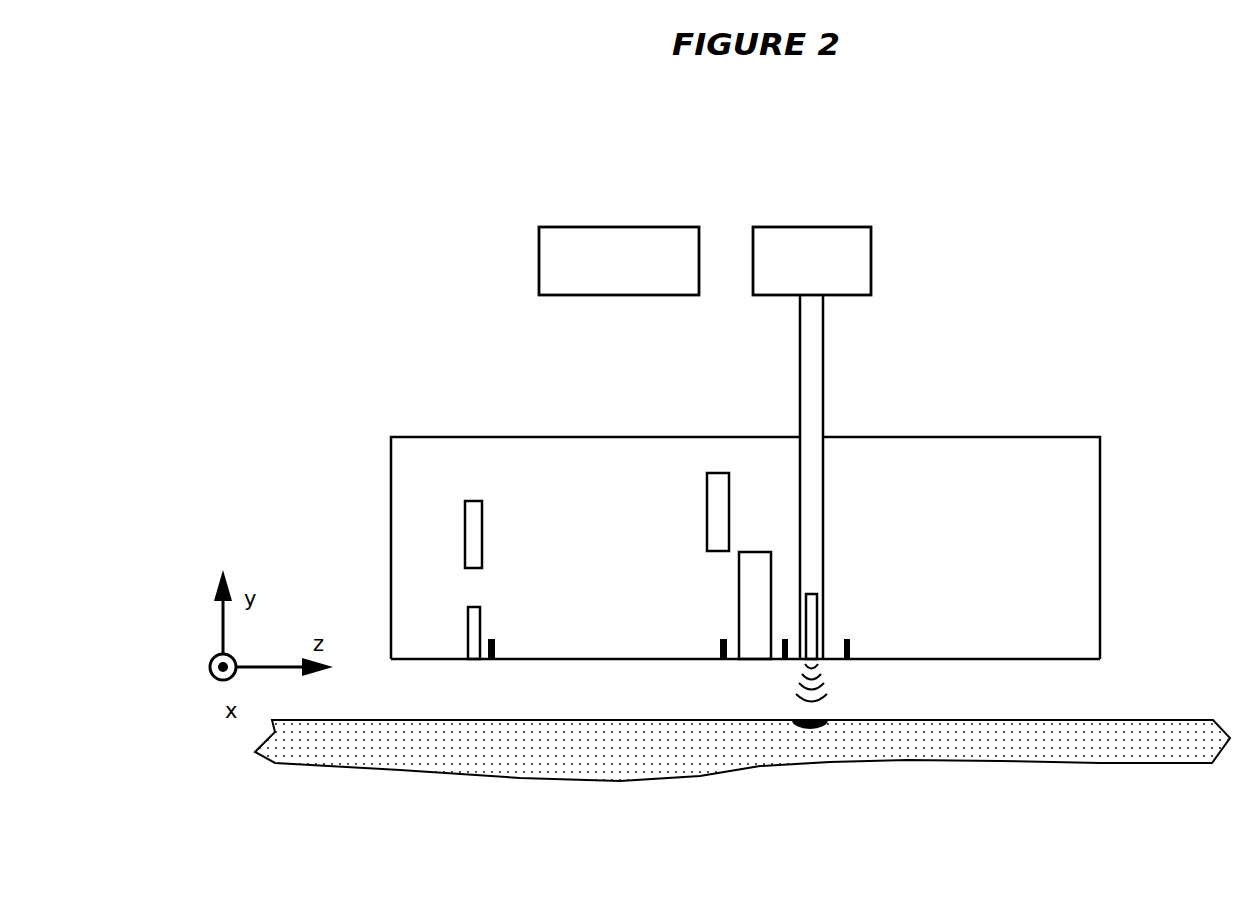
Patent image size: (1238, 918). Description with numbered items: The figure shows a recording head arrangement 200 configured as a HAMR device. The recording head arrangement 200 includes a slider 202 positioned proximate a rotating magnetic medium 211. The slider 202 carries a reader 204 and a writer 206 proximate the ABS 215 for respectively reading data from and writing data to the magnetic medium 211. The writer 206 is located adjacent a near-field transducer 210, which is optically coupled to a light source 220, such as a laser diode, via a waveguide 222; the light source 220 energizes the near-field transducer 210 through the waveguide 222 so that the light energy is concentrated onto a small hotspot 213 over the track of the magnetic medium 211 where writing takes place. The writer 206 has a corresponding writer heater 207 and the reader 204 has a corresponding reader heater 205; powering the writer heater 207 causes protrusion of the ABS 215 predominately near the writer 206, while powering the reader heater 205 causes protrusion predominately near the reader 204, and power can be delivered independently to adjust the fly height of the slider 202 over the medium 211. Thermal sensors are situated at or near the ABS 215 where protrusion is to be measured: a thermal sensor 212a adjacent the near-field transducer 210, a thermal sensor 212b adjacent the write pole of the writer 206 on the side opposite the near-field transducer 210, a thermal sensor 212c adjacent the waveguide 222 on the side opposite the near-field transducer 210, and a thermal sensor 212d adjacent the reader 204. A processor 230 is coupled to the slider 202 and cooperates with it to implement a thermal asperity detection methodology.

The recording head arrangement 200 is at (416, 123).
The slider 202 is at (1136, 407).
The reader 204 is at (468, 626).
The reader heater 205 is at (483, 535).
The writer 206 is at (739, 613).
The writer heater 207 is at (707, 520).
The near-field transducer 210 is at (806, 601).
The magnetic medium 211 is at (1162, 720).
The thermal sensor 212a is at (782, 661).
The thermal sensor 212b is at (722, 661).
The thermal sensor 212c is at (847, 661).
The thermal sensor 212d is at (491, 661).
The hotspot 213 is at (810, 726).
The air bearing surface 215 is at (983, 661).
The light source 220 is at (871, 257).
The waveguide 222 is at (824, 373).
The processor 230 is at (539, 259).